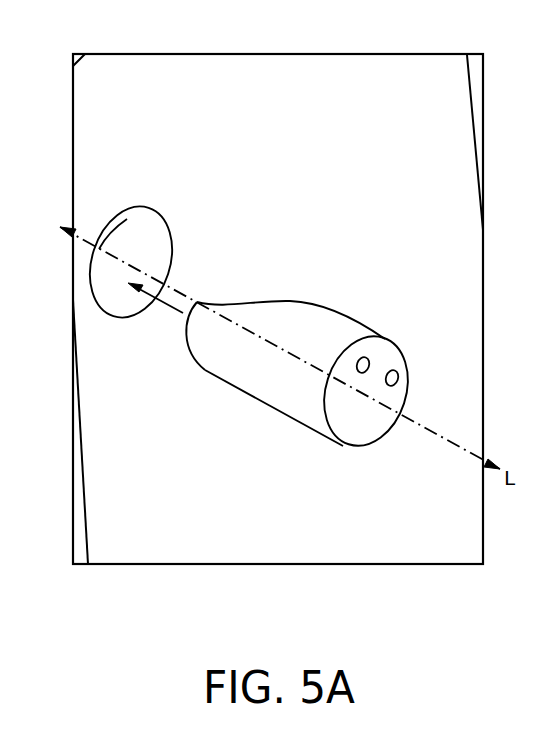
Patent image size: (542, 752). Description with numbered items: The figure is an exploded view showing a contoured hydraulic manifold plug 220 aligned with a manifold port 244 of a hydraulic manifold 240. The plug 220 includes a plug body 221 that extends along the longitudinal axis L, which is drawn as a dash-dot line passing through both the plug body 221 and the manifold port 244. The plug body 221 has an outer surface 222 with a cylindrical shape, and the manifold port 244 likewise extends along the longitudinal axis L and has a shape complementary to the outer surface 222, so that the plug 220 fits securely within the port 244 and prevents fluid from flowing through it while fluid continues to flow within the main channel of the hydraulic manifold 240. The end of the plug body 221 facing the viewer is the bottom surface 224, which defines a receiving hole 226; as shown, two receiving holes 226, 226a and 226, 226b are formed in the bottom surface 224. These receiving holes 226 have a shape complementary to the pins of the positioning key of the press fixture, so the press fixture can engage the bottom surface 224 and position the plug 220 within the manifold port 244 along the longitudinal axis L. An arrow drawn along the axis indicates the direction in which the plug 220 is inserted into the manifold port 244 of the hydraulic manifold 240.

The hydraulic manifold 240 is at (358, 82).
The manifold port 244 is at (134, 258).
The hydraulic manifold plug 220 is at (331, 398).
The plug body 221 is at (232, 387).
The outer surface 222 is at (300, 406).
The bottom surface 224 is at (348, 427).
The receiving hole 226 is at (416, 361).
The receiving hole 226a is at (367, 358).
The receiving hole 226b is at (398, 377).